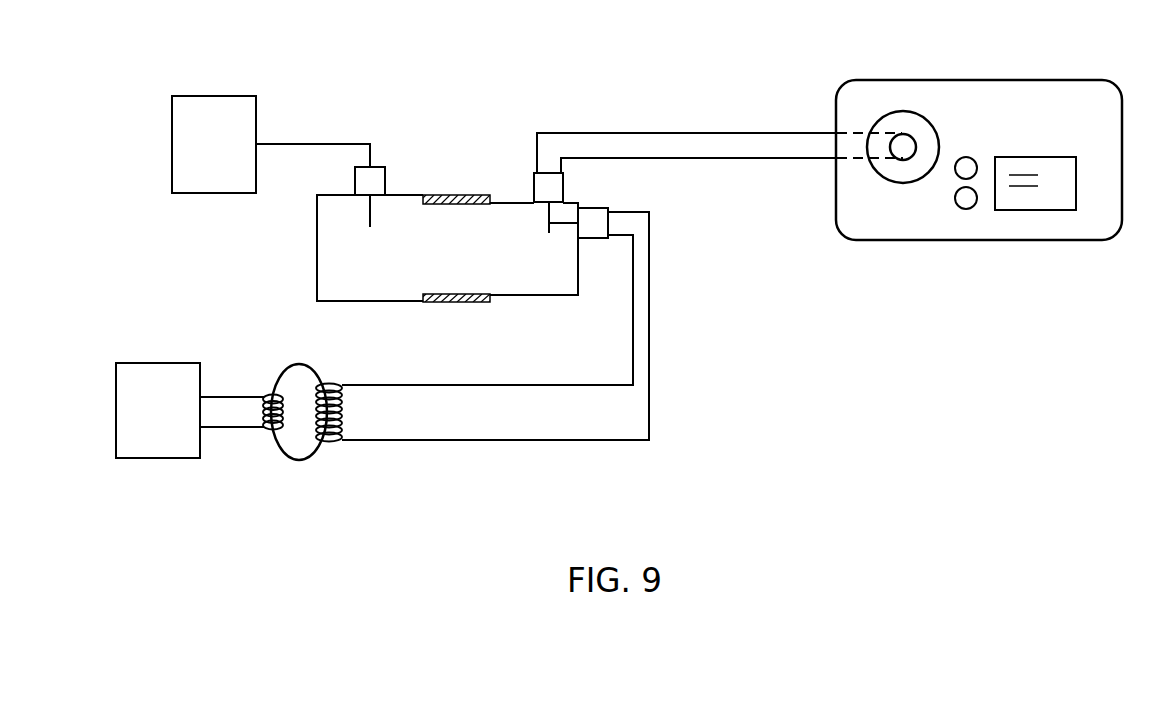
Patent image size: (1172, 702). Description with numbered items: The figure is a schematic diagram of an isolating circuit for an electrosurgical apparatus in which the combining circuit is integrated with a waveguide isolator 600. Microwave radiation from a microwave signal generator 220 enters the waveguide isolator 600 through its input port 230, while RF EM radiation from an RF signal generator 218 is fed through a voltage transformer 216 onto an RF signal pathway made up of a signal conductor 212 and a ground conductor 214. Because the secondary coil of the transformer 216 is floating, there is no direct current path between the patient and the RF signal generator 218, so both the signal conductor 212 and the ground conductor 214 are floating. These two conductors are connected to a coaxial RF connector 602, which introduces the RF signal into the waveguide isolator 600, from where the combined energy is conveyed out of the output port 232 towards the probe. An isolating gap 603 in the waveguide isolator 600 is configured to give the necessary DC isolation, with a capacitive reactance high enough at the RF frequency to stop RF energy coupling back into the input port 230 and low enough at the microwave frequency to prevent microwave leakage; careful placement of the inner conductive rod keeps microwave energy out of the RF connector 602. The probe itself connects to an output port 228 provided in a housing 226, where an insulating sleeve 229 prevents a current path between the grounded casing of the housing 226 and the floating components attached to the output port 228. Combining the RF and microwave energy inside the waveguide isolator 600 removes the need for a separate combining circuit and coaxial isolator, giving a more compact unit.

The signal conductor 212 is at (497, 387).
The ground conductor 214 is at (580, 442).
The voltage transformer 216 is at (298, 462).
The RF signal generator 218 is at (157, 460).
The microwave signal generator 220 is at (212, 195).
The housing 226 is at (1048, 80).
The output port 228 is at (903, 111).
The insulating sleeve 229 is at (903, 160).
The input port 230 is at (373, 167).
The output port 232 is at (533, 188).
The waveguide isolator 600 is at (317, 262).
The coaxial RF connector 602 is at (592, 222).
The isolating gap 603 is at (468, 303).